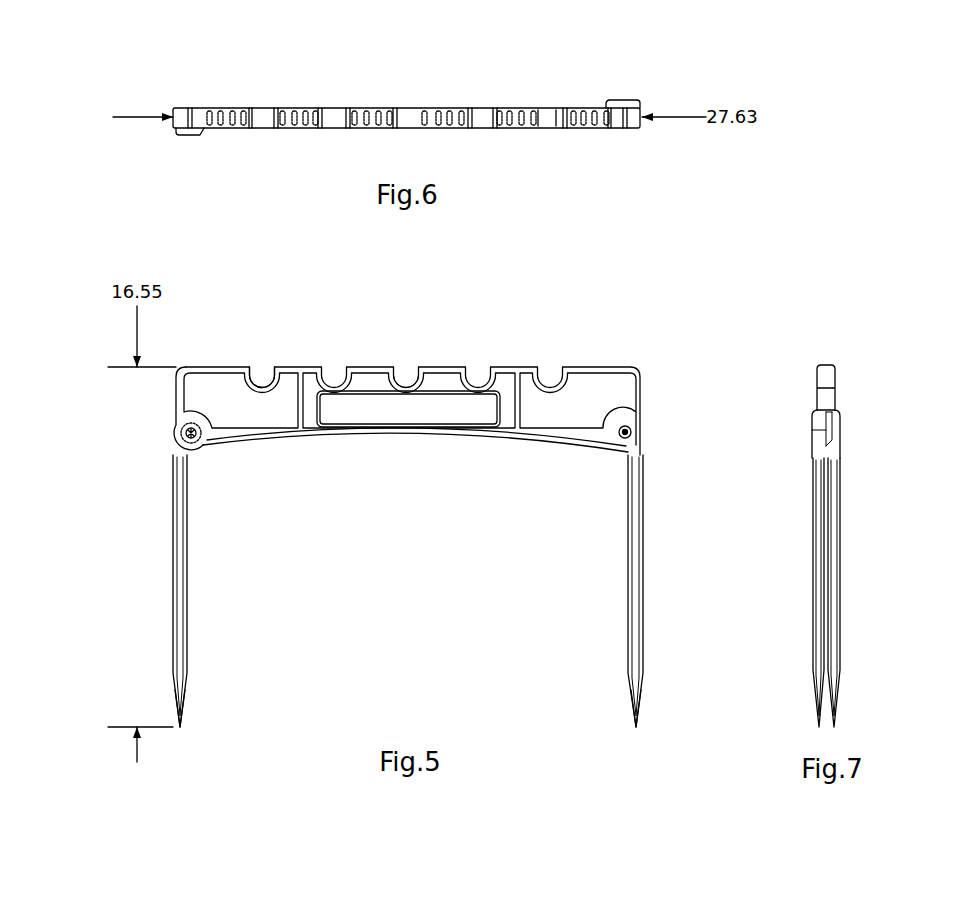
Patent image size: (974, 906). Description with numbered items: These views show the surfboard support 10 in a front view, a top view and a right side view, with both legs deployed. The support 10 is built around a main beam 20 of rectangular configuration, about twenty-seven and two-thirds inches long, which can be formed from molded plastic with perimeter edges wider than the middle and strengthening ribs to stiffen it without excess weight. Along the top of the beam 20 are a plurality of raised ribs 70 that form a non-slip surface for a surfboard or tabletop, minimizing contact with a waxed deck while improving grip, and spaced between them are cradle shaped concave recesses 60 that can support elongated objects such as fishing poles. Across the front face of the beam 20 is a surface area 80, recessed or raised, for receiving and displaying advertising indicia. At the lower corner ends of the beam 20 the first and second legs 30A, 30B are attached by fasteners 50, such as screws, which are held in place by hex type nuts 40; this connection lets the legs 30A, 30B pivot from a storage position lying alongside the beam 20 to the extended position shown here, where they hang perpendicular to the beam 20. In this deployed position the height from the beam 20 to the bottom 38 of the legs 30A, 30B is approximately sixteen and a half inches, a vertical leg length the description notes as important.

In FIG. 6, the surfboard support 10 is at (598, 79).
In FIG. 5, the surfboard support 10 is at (598, 320).
In FIG. 7, the surfboard support 10 is at (851, 337).
In FIG. 6, the main beam 20 is at (333, 108).
In FIG. 5, the main beam 20 is at (613, 388).
In FIG. 7, the main beam 20 is at (822, 405).
In FIG. 6, the first leg 30A is at (185, 137).
In FIG. 5, the first leg 30A is at (178, 562).
In FIG. 7, the first leg 30A is at (818, 581).
In FIG. 6, the second leg 30B is at (627, 106).
In FIG. 5, the second leg 30B is at (636, 557).
In FIG. 7, the second leg 30B is at (838, 611).
In FIG. 5, the bottom of the legs 38 is at (183, 730).
In FIG. 5, the hex type nut 40 is at (632, 431).
In FIG. 5, the fastener 50 is at (189, 437).
In FIG. 6, the cradle shaped concave recess 60 is at (552, 120).
In FIG. 5, the cradle shaped concave recess 60 is at (260, 381).
In FIG. 6, the raised ribs 70 is at (293, 122).
In FIG. 5, the raised ribs 70 is at (437, 376).
In FIG. 7, the raised ribs 70 is at (827, 365).
In FIG. 5, the surface area 80 is at (334, 422).